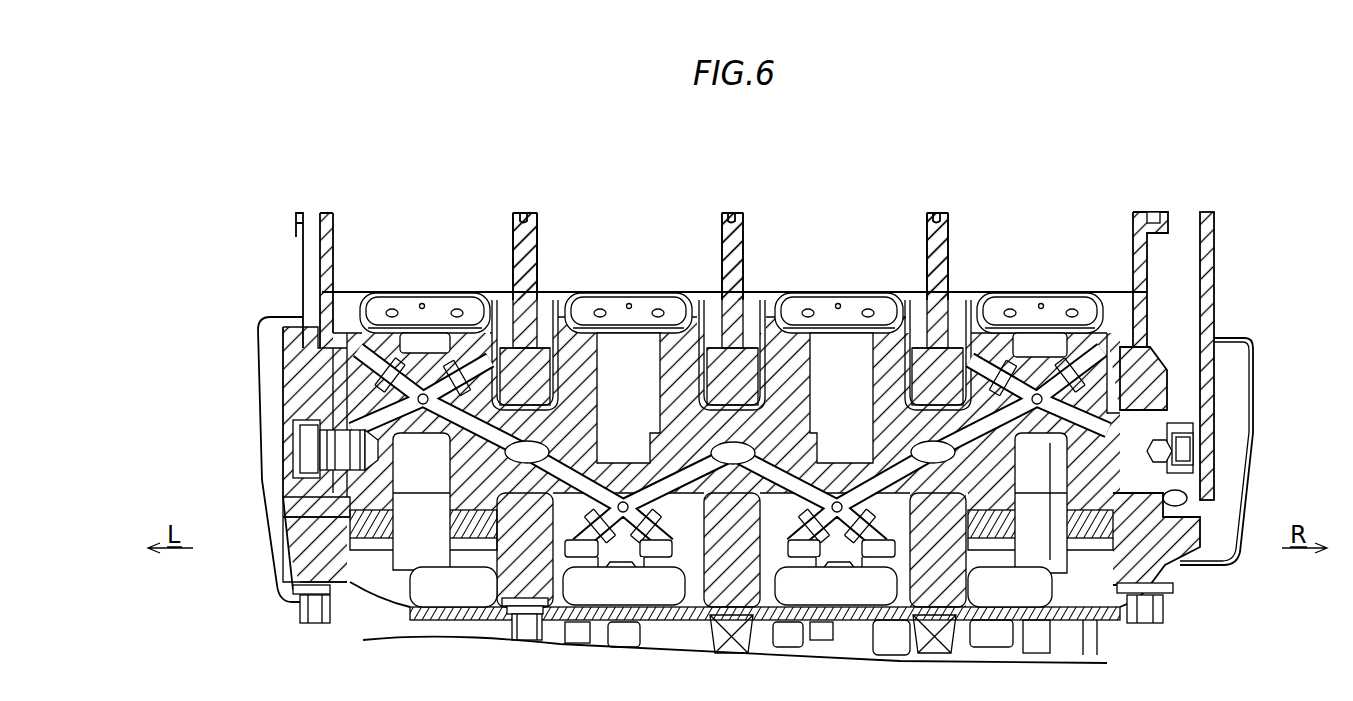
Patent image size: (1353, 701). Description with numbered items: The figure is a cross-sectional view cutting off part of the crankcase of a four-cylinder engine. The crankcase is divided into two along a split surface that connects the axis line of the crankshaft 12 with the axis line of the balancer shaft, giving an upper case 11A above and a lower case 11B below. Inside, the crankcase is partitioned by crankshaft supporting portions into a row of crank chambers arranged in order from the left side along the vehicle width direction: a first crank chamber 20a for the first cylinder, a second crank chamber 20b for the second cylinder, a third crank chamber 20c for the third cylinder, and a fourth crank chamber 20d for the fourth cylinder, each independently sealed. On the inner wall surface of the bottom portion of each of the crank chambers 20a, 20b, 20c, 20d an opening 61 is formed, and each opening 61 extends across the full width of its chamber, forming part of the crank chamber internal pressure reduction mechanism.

The upper case 11A is at (322, 265).
The lower case 11B is at (323, 547).
The crankshaft 12 is at (1143, 423).
The first crank chamber 20a is at (430, 348).
The second crank chamber 20b is at (630, 357).
The third crank chamber 20c is at (850, 357).
The fourth crank chamber 20d is at (1035, 357).
The opening 61 is at (1027, 592).